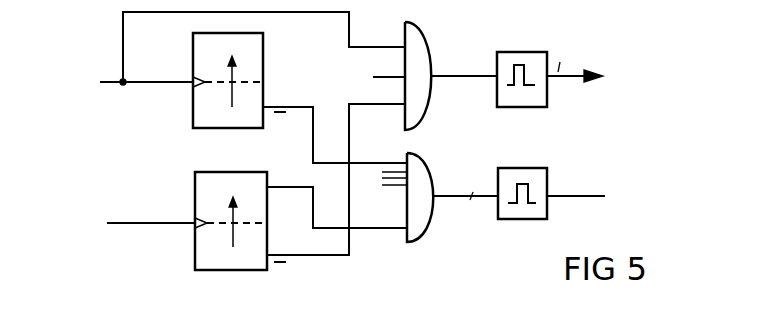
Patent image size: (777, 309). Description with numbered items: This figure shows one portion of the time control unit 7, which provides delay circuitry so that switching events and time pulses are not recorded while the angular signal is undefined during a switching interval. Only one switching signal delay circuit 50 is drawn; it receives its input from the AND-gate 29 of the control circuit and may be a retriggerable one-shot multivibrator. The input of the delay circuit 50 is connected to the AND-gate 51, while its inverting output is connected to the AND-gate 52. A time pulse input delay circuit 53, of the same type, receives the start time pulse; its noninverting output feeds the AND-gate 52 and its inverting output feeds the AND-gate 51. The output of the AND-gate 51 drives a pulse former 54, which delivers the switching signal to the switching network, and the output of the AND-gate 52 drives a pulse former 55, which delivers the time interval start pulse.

The time control unit 7 is at (391, 286).
The AND-gate 29 is at (119, 82).
The delay circuit 50 is at (193, 50).
The AND-gate 51 is at (426, 34).
The AND-gate 52 is at (427, 172).
The delay circuit 53 is at (193, 188).
The pulse former 54 is at (516, 52).
The pulse former 55 is at (520, 168).